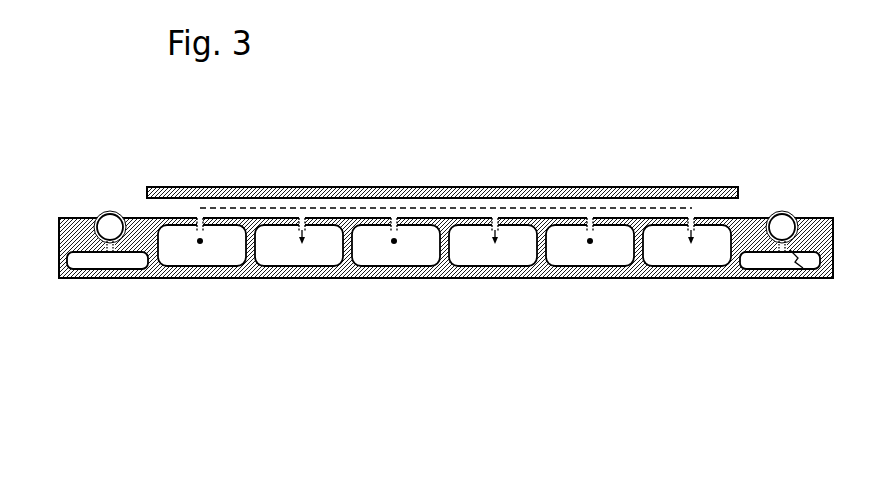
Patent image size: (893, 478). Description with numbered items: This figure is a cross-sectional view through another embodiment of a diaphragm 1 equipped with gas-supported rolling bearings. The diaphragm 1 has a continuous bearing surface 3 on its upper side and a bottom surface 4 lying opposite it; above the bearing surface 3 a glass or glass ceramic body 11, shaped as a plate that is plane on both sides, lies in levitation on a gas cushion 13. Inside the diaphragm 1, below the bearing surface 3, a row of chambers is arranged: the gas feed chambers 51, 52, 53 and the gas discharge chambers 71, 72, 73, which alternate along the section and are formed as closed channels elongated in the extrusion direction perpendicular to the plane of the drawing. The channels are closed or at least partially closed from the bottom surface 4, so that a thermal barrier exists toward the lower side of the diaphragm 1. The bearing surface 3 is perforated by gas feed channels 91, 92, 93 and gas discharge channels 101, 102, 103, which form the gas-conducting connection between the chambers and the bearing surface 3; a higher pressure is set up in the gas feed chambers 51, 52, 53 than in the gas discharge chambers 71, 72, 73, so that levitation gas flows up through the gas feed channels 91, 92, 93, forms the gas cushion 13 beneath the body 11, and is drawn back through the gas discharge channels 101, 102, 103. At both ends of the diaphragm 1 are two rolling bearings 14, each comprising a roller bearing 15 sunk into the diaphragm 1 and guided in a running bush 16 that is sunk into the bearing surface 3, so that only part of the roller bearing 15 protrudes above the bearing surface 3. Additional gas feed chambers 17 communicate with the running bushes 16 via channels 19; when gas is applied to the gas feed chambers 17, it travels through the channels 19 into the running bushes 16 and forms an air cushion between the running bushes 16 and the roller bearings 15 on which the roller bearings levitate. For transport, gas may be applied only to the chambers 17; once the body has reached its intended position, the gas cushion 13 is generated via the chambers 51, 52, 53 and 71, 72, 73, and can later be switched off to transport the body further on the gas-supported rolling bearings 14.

The diaphragm 1 is at (444, 247).
The bearing surface 3 is at (215, 222).
The bottom surface 4 is at (137, 280).
The glass or glass ceramic body 11 is at (617, 187).
The gas cushion 13 is at (174, 205).
The rolling bearing 14 is at (100, 187).
The roller bearing 15 is at (112, 213).
The running bush 16 is at (90, 238).
The gas feed chamber 17 is at (100, 268).
The channel 19 is at (88, 239).
The gas feed chamber 51 is at (195, 267).
The gas feed chamber 52 is at (390, 268).
The gas feed chamber 53 is at (567, 268).
The gas discharge chamber 71 is at (295, 268).
The gas discharge chamber 72 is at (485, 268).
The gas discharge chamber 73 is at (668, 268).
The gas feed channel 91 is at (200, 218).
The gas feed channel 92 is at (393, 218).
The gas feed channel 93 is at (590, 218).
The gas discharge channel 101 is at (302, 218).
The gas discharge channel 102 is at (495, 218).
The gas discharge channel 103 is at (691, 218).